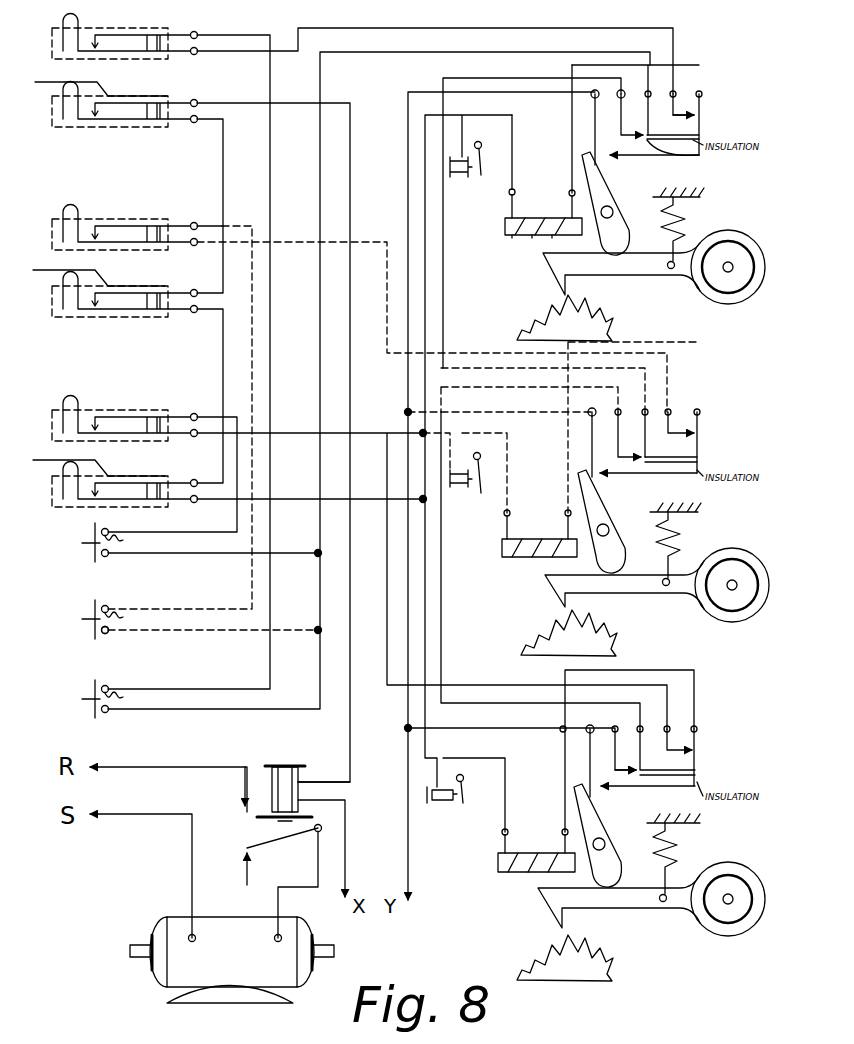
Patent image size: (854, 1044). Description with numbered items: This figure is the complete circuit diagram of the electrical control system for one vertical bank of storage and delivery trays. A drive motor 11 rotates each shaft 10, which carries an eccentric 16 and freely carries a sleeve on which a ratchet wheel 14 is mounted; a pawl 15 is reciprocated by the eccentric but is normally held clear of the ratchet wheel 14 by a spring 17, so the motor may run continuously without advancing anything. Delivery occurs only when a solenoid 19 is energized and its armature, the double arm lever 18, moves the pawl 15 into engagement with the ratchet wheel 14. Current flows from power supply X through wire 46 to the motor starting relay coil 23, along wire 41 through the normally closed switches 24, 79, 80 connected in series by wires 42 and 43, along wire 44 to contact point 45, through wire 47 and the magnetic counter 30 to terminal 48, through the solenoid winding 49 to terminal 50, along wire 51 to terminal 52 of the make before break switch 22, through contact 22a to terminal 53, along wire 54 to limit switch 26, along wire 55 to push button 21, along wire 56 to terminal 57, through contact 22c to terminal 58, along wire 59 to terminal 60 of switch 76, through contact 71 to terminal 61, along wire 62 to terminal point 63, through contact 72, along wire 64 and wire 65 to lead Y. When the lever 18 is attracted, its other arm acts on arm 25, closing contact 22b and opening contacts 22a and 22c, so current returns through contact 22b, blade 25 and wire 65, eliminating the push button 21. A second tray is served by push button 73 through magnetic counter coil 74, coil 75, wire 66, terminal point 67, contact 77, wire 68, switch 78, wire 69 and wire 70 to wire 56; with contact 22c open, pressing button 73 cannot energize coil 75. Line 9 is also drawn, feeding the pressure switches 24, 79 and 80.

The inlet line 9 is at (42, 80).
The shaft 10 is at (732, 583).
The drive motor 11 is at (232, 960).
The ratchet wheel 14 is at (597, 295).
The pawl 15 is at (643, 279).
The eccentric 16 is at (753, 260).
The spring 17 is at (682, 215).
The double arm lever 18 is at (628, 240).
The solenoid 19 is at (542, 215).
The push button 21 is at (85, 697).
The make before break switch 22 is at (694, 135).
The switch contact 22a is at (697, 113).
The switch contact 22b is at (603, 159).
The switch contact 22c is at (700, 158).
The motor starting relay coil 23 is at (286, 767).
The normally closed stop switch 24 is at (80, 128).
The arm 25 is at (594, 125).
The limit switch 26 is at (150, 62).
The magnetic counter 30 is at (476, 144).
The wire 41 is at (347, 616).
The wire 42 is at (224, 176).
The wire 43 is at (222, 373).
The wire 44 is at (305, 488).
The contact point 45 is at (428, 505).
The wire 46 is at (346, 824).
The wire 47 is at (428, 295).
The terminal 48 is at (508, 192).
The solenoid winding 49 is at (535, 236).
The terminal 50 is at (572, 188).
The wire 51 is at (571, 134).
The terminal 52 is at (700, 92).
The terminal 53 is at (675, 90).
The wire 54 is at (538, 30).
The wire 55 is at (271, 185).
The wire 56 is at (319, 360).
The terminal 57 is at (645, 90).
The terminal 58 is at (620, 100).
The wire 59 is at (490, 75).
The terminal 60 is at (645, 410).
The terminal 61 is at (618, 410).
The wire 62 is at (441, 586).
The terminal point 63 is at (641, 728).
The wire 64 is at (507, 729).
The wire 65 is at (470, 93).
The wire 66 is at (566, 455).
The terminal point 67 is at (698, 412).
The wire 68 is at (631, 352).
The wire 69 is at (253, 318).
The wire 70 is at (178, 634).
The switch contact 71 is at (650, 457).
The switch contact 72 is at (636, 765).
The push button 73 is at (108, 642).
The magnetic counter coil 74 is at (470, 447).
The coil 75 is at (548, 542).
The switch 76 is at (706, 460).
The switch contact 77 is at (699, 433).
The switch 78 is at (130, 251).
The normally closed switch 79 is at (126, 321).
The normally closed switch 80 is at (120, 471).